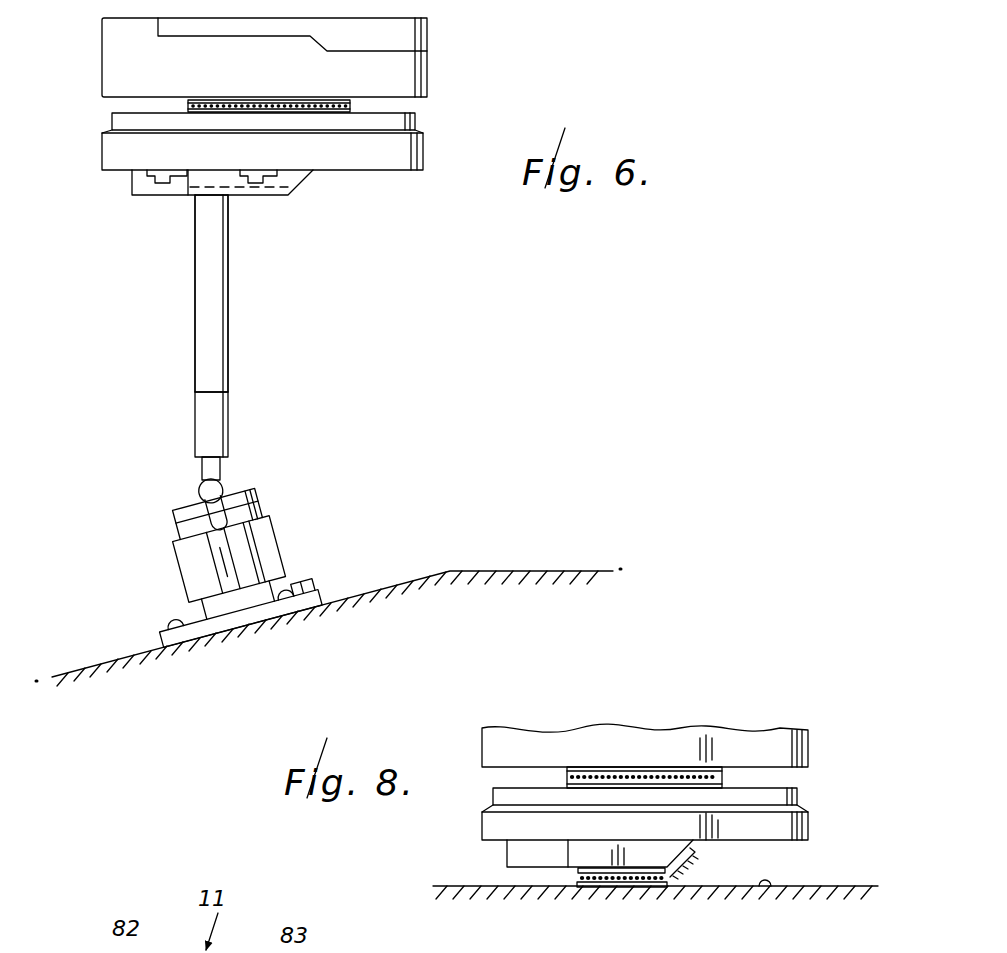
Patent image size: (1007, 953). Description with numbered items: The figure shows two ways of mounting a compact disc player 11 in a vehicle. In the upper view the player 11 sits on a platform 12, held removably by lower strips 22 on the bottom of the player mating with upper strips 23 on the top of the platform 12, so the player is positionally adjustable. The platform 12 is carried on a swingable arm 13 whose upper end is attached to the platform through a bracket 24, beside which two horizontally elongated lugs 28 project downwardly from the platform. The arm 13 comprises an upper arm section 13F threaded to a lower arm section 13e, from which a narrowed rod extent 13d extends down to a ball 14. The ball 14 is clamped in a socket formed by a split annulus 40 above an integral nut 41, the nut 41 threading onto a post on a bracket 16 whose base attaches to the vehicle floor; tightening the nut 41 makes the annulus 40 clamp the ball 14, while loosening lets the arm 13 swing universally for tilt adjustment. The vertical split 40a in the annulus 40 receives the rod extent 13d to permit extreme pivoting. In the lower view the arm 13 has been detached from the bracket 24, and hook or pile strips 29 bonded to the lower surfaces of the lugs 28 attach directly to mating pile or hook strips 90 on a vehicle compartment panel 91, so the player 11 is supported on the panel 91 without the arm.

In FIG. 6, the compact disc player 11 is at (442, 57).
In FIG. 8, the compact disc player 11 is at (762, 737).
In FIG. 6, the platform 12 is at (100, 140).
In FIG. 8, the platform 12 is at (812, 808).
In FIG. 6, the arm 13 is at (199, 337).
In FIG. 6, the arm section 13F is at (218, 292).
In FIG. 6, the arm section 13e is at (193, 407).
In FIG. 6, the narrowed rod extent 13d is at (223, 465).
In FIG. 6, the ball 14 is at (198, 483).
In FIG. 6, the bracket 16 is at (207, 622).
In FIG. 8, the lower strips 22 is at (593, 770).
In FIG. 8, the upper strips 23 is at (667, 776).
In FIG. 6, the bracket 24 is at (187, 188).
In FIG. 6, the lugs 28 is at (283, 188).
In FIG. 8, the lugs 28 is at (577, 853).
In FIG. 8, the hook or pile strips 29 is at (590, 876).
In FIG. 6, the split annulus 40 is at (214, 507).
In FIG. 6, the vertical split 40a is at (253, 495).
In FIG. 6, the nut 41 is at (173, 567).
In FIG. 8, the pile or hook strips 90 is at (638, 884).
In FIG. 8, the vehicle compartment panel 91 is at (770, 888).